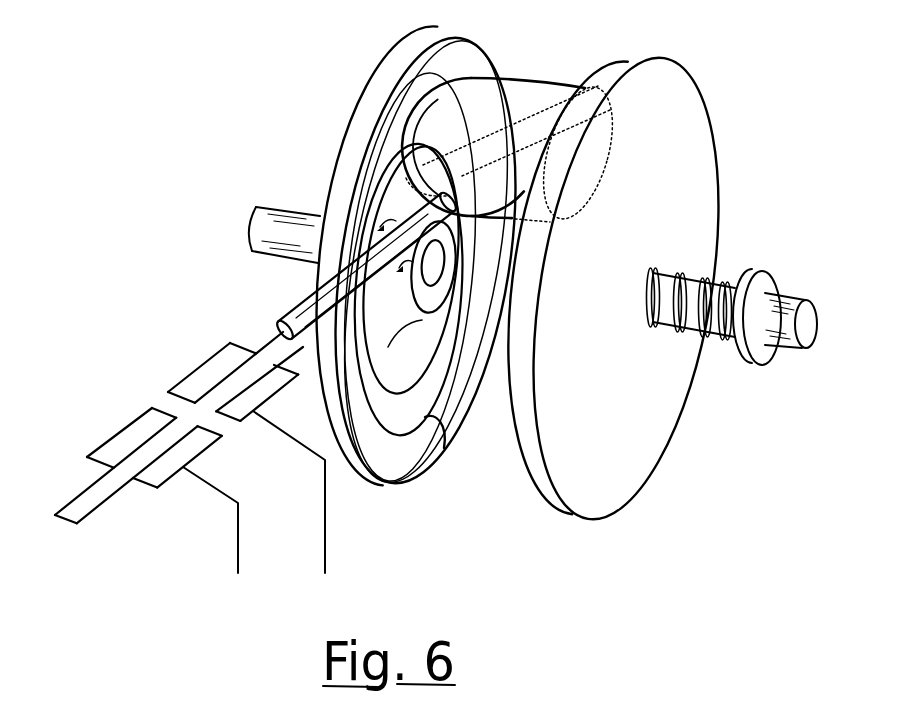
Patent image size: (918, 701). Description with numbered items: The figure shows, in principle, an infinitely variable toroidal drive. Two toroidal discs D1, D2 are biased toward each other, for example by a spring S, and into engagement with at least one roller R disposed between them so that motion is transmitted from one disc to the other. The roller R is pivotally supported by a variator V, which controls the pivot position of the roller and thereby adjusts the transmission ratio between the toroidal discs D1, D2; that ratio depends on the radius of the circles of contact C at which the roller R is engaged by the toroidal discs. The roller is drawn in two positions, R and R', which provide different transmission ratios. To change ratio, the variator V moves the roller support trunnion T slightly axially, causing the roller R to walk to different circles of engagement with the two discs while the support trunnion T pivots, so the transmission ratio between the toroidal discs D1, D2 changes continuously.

The variator V is at (170, 421).
The roller support trunnion T is at (281, 322).
The toroidal disc D1 is at (370, 483).
The toroidal disc D2 is at (653, 481).
The circles of contact C is at (444, 448).
The roller R is at (506, 110).
The roller (second position) R' is at (543, 152).
The spring S is at (723, 280).